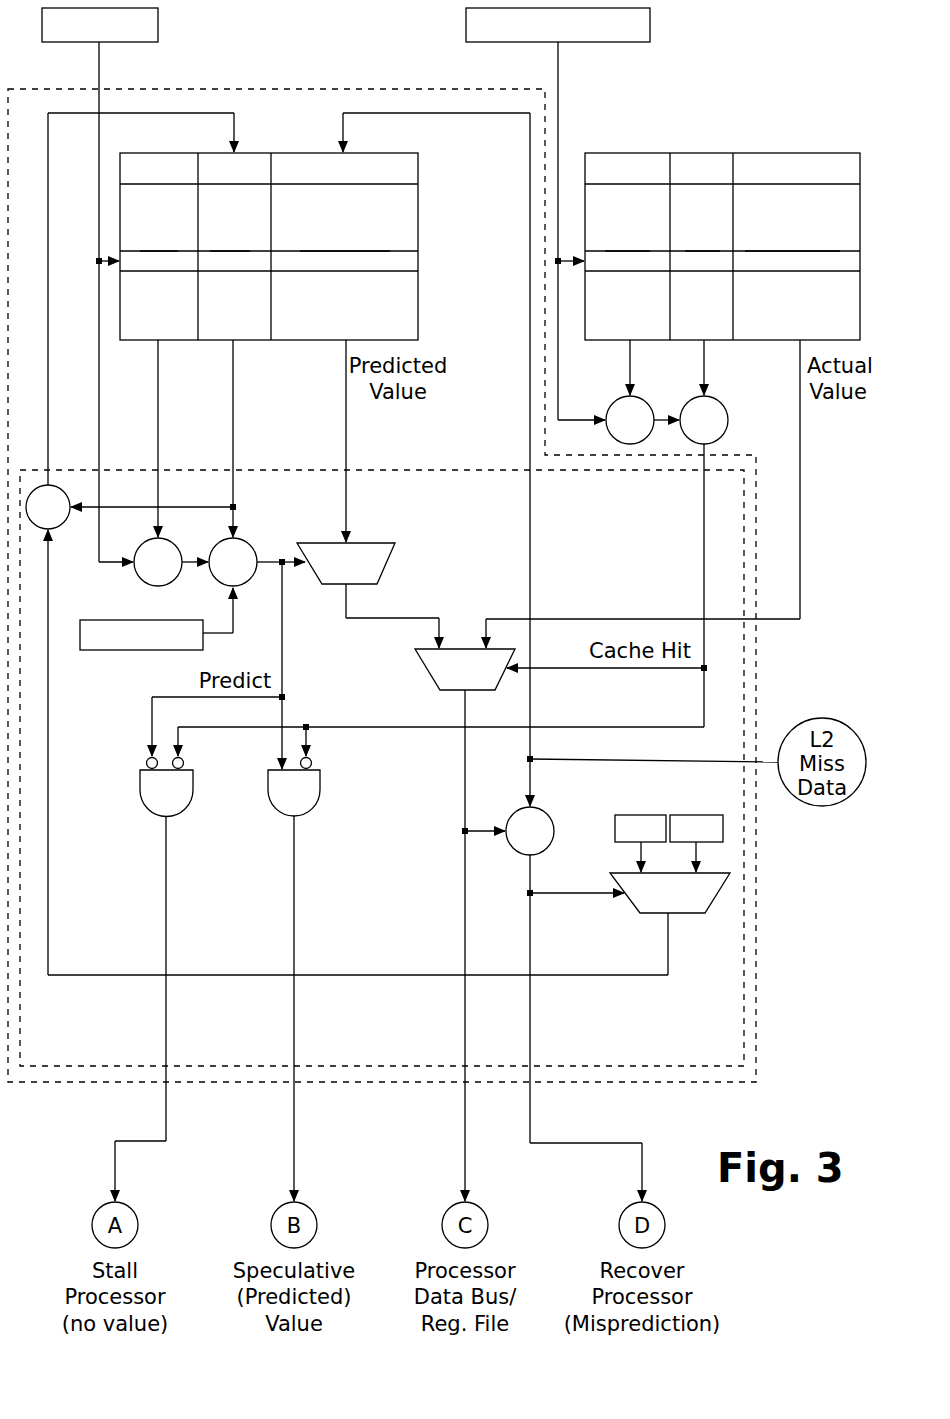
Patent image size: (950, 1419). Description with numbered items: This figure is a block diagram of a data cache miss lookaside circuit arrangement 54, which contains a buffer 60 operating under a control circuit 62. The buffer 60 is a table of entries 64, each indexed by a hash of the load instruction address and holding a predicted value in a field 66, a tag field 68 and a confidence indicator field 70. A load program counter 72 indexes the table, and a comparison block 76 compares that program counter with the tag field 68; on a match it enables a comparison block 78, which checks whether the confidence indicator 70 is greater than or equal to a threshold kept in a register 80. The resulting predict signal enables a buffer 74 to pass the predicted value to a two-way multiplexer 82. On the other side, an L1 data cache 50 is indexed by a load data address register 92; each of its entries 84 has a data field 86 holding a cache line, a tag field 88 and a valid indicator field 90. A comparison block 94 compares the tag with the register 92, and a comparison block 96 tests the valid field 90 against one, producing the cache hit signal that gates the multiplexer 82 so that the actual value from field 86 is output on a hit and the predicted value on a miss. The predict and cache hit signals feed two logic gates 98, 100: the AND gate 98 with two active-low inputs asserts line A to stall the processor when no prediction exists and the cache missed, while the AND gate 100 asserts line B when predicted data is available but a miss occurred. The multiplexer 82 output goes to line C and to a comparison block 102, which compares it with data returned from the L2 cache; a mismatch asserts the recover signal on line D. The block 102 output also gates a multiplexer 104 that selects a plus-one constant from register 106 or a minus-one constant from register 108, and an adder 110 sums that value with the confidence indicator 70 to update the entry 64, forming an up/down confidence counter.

The L1 data cache 50 is at (722, 212).
The data cache miss lookaside circuit arrangement 54 is at (324, 88).
The buffer 60 is at (303, 246).
The control circuit 62 is at (449, 469).
The entry 64 is at (403, 264).
The predicted value field 66 is at (348, 251).
The tag field 68 is at (152, 248).
The confidence indicator field 70 is at (211, 250).
The load program counter 72 is at (159, 30).
The buffer 74 is at (372, 551).
The comparison block 76 is at (165, 578).
The comparison block 78 is at (250, 545).
The register 80 is at (105, 652).
The two-way multiplexer 82 is at (425, 673).
The entry 84 is at (783, 268).
The data field 86 is at (767, 250).
The tag field 88 is at (629, 250).
The valid indicator field 90 is at (694, 250).
The load data address register 92 is at (603, 43).
The comparison block 94 is at (648, 403).
The comparison block 96 is at (728, 413).
The logic gate 98 is at (183, 812).
The logic gate 100 is at (318, 809).
The comparison block 102 is at (553, 822).
The multiplexer 104 is at (681, 908).
The constant register 106 is at (642, 815).
The constant register 108 is at (708, 815).
The adder 110 is at (61, 530).